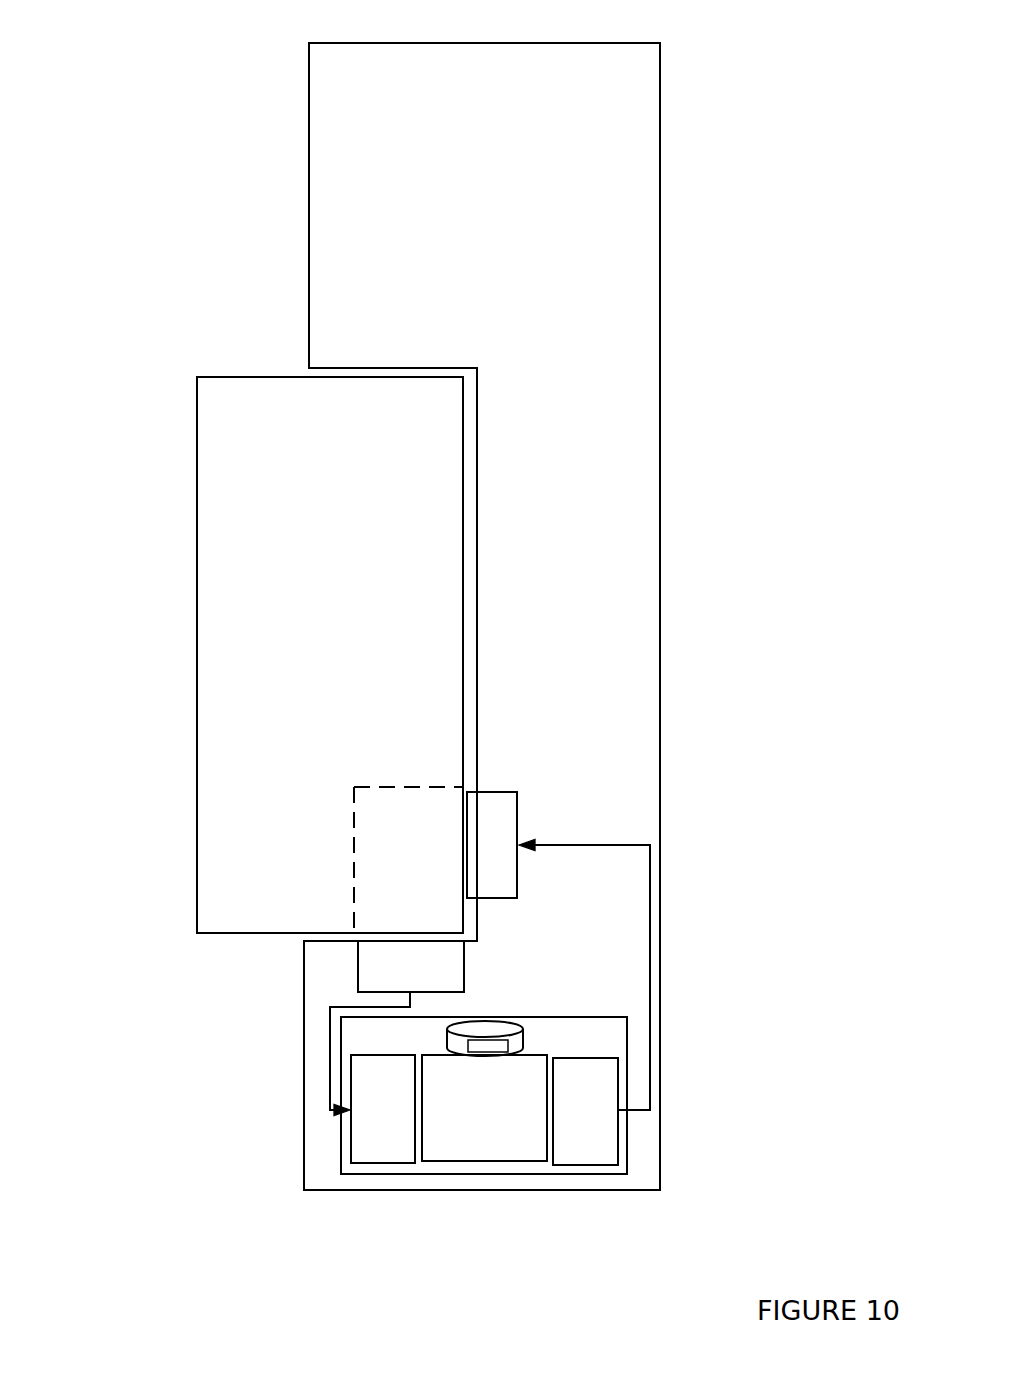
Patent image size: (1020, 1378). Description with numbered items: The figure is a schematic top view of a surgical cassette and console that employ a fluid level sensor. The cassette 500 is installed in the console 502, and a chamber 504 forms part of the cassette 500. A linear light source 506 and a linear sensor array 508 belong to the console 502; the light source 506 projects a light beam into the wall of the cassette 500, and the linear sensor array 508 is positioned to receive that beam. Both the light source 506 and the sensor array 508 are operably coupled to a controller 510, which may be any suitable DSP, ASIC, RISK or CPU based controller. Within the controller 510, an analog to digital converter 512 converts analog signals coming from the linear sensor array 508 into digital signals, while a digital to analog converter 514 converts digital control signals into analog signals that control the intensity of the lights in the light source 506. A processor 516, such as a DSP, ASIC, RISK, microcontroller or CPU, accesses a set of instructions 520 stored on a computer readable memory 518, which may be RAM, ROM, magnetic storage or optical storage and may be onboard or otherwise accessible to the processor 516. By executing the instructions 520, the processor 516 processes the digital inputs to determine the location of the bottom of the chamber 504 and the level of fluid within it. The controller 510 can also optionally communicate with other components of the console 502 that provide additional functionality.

The cassette 500 is at (186, 352).
The console 502 is at (642, 158).
The chamber 504 is at (369, 844).
The linear light source 506 is at (535, 808).
The linear sensor array 508 is at (343, 977).
The controller 510 is at (646, 1162).
The analog to digital converter 512 is at (384, 1179).
The digital to analog converter 514 is at (597, 1180).
The processor 516 is at (497, 1176).
The computer readable memory 518 is at (522, 1017).
The set of instructions 520 is at (528, 1043).